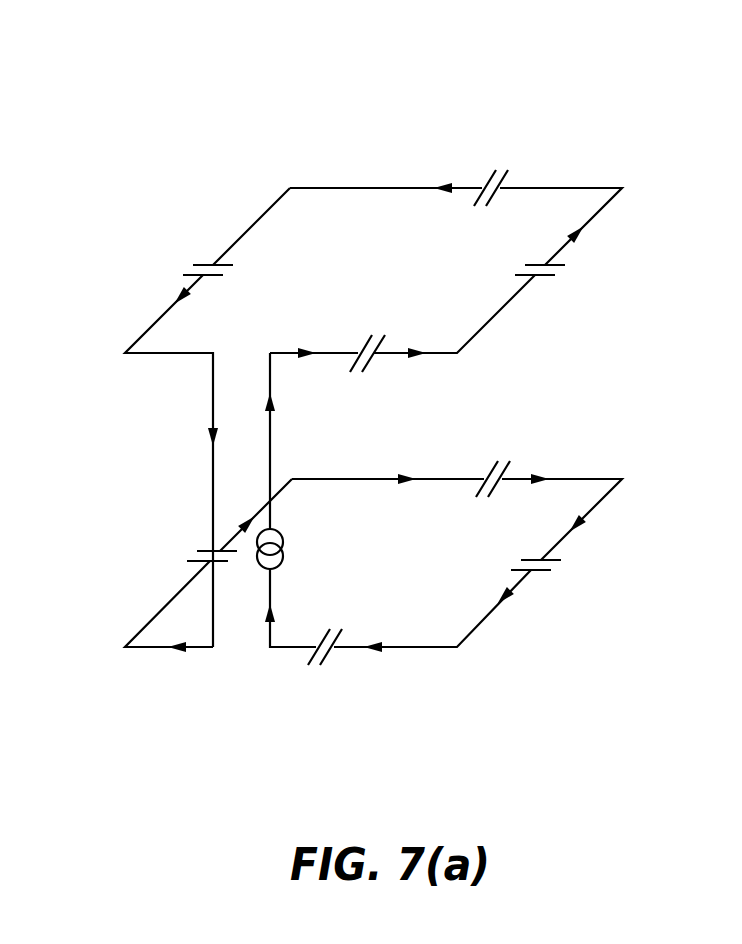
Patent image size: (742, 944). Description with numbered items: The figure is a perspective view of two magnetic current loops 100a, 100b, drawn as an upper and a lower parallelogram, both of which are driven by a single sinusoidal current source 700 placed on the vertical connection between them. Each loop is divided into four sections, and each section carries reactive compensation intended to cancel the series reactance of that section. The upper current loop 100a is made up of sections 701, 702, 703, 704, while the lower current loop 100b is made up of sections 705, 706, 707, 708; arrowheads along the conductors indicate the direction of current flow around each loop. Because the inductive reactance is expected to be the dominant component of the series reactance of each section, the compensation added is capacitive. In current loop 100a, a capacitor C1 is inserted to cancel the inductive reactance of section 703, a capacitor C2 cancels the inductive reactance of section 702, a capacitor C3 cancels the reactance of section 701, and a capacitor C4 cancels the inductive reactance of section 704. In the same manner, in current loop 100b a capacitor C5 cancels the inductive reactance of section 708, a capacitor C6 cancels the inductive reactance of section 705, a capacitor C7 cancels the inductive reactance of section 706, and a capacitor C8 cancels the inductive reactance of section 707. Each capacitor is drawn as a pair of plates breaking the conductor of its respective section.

The magnetic current loop 100a is at (590, 140).
The magnetic current loop 100b is at (473, 668).
The sinusoidal current source 700 is at (283, 555).
The section 701 is at (283, 196).
The section 702 is at (603, 208).
The section 703 is at (487, 322).
The section 704 is at (150, 323).
The section 705 is at (372, 479).
The section 706 is at (603, 500).
The section 707 is at (423, 647).
The section 708 is at (147, 647).
The capacitor C1 is at (330, 405).
The capacitor C2 is at (563, 282).
The capacitor C3 is at (496, 162).
The capacitor C4 is at (211, 245).
The capacitor C5 is at (189, 558).
The capacitor C6 is at (479, 501).
The capacitor C7 is at (559, 576).
The capacitor C8 is at (303, 639).